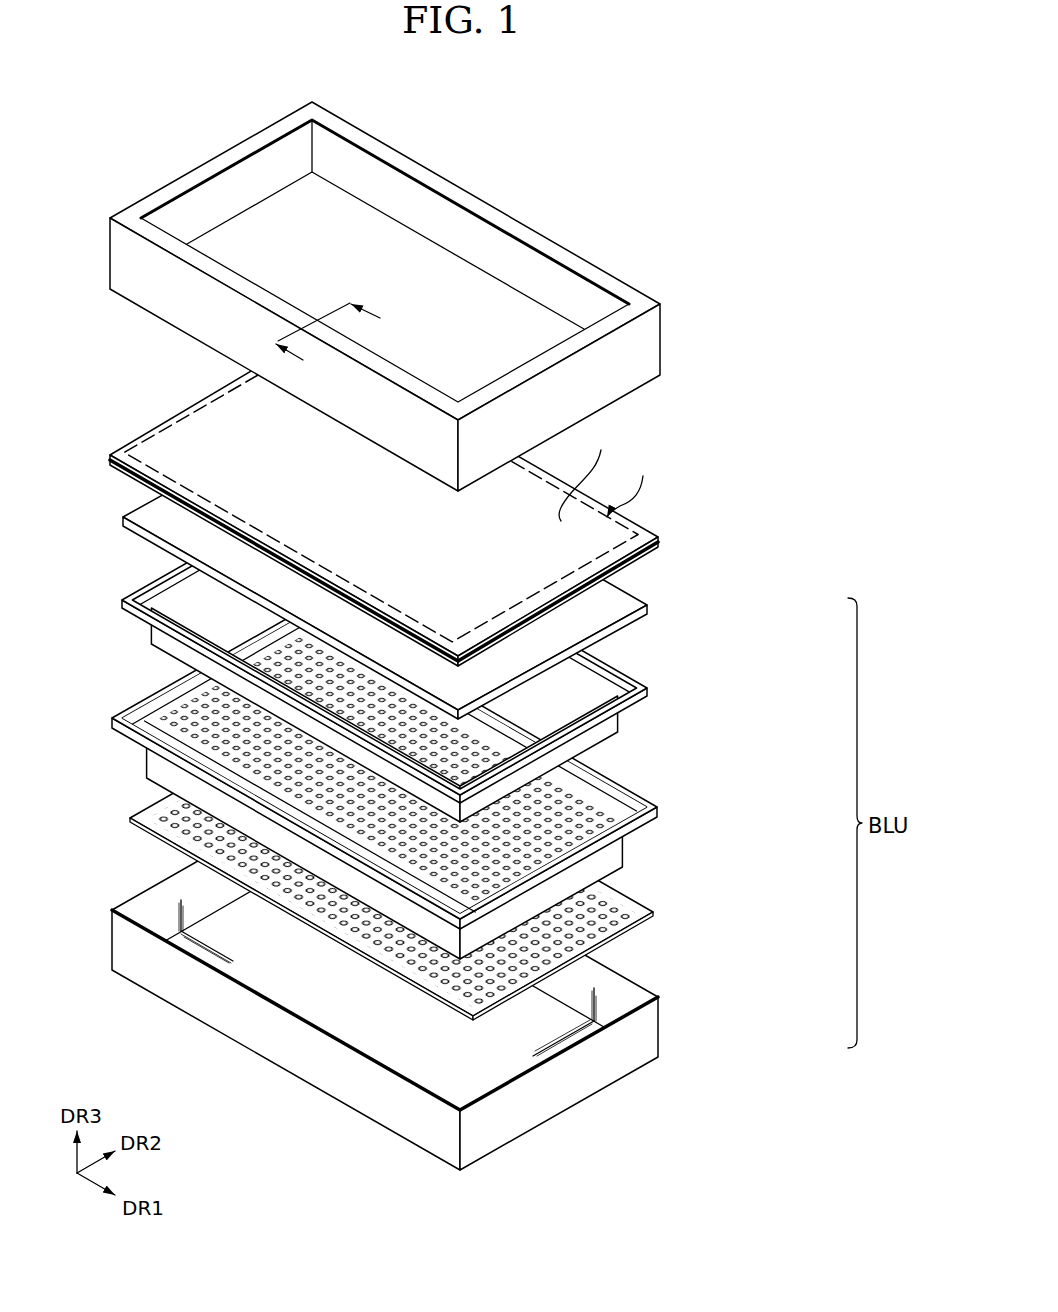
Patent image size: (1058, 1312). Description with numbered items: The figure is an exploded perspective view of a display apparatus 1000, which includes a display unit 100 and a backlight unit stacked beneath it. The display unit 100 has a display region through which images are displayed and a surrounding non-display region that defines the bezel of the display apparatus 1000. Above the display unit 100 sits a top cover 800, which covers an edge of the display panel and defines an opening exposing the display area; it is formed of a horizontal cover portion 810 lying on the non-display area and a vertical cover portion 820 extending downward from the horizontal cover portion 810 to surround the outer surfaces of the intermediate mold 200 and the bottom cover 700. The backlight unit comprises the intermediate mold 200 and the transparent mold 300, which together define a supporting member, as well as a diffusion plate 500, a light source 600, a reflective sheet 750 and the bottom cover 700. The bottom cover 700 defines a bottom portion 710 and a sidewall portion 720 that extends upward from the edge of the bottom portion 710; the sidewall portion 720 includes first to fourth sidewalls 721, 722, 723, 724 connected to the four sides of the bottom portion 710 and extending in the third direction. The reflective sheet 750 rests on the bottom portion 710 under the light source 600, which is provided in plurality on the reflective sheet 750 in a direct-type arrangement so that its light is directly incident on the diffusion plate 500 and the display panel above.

The display apparatus 1000 is at (481, 656).
The top cover 800 is at (453, 296).
The horizontal cover portion 810 is at (641, 295).
The vertical cover portion 820 is at (648, 338).
The display unit 100 is at (662, 541).
The diffusion plate 500 is at (647, 605).
The transparent mold 300 is at (632, 673).
The intermediate mold 200 is at (425, 782).
The light source 600 is at (620, 897).
The reflective sheet 750 is at (653, 910).
The bottom cover 700 is at (482, 1005).
The bottom portion 710 is at (553, 1015).
The sidewall portion 720 is at (499, 1054).
The first sidewall 721 is at (443, 1135).
The second sidewall 722 is at (608, 1067).
The third sidewall 723 is at (613, 1000).
The fourth sidewall 724 is at (203, 895).